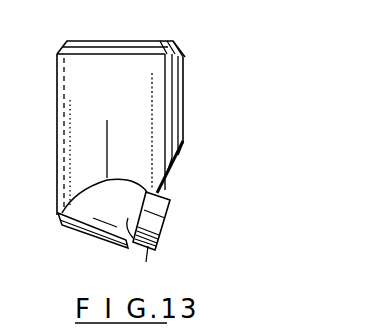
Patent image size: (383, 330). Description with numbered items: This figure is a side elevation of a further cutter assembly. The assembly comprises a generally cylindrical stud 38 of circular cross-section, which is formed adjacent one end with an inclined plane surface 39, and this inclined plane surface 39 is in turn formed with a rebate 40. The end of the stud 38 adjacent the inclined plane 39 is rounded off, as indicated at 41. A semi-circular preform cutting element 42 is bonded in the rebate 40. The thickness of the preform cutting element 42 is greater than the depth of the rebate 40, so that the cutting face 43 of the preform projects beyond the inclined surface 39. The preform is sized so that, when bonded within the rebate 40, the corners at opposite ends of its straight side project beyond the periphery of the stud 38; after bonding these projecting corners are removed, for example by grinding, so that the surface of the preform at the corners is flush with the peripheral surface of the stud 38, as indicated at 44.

The stud 38 is at (162, 122).
The inclined plane surface 39 is at (175, 163).
The rebate 40 is at (123, 238).
The rounded-off end 41 is at (92, 232).
The preform cutting element 42 is at (155, 263).
The cutting face 43 is at (160, 228).
The flush corner surface 44 is at (167, 202).